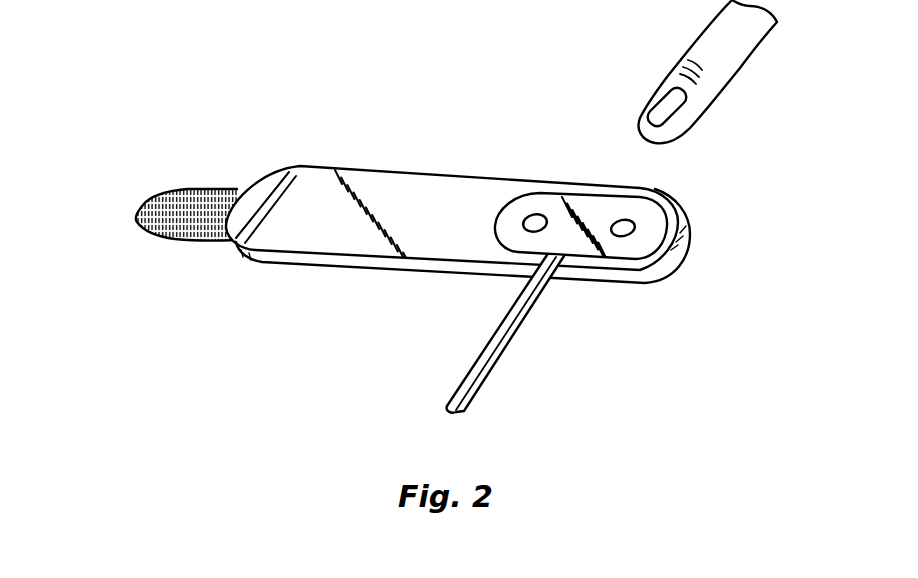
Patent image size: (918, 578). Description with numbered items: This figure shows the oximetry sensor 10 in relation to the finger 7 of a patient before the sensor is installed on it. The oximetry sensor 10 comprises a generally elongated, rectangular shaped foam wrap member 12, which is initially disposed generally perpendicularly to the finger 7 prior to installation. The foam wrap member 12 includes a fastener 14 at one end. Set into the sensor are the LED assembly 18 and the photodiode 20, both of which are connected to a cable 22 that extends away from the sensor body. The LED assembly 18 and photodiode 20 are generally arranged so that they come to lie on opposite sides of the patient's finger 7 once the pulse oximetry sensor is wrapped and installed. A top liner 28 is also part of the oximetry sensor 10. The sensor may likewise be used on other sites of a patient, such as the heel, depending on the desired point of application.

The finger 7 is at (733, 60).
The oximetry sensor 10 is at (413, 141).
The foam wrap member 12 is at (307, 237).
The fastener 14 is at (135, 215).
The LED assembly 18 is at (632, 230).
The photodiode 20 is at (523, 222).
The cable 22 is at (507, 348).
The top liner 28 is at (647, 213).